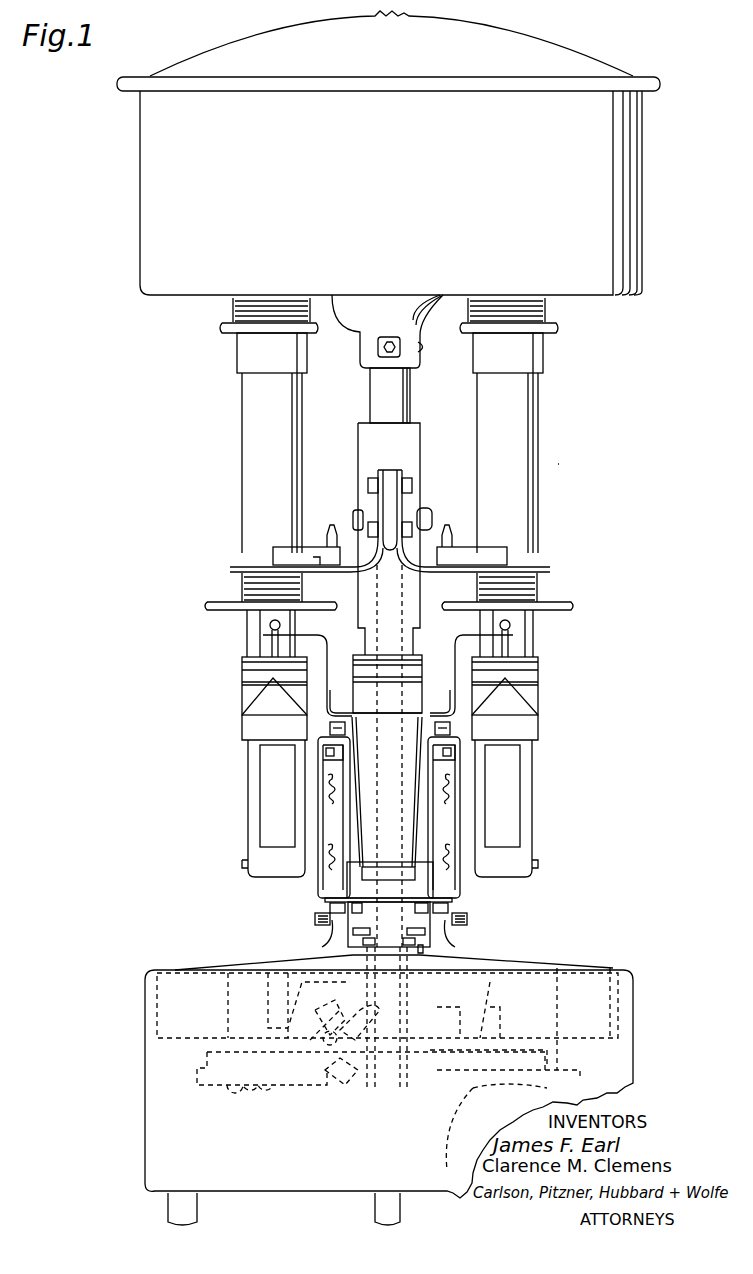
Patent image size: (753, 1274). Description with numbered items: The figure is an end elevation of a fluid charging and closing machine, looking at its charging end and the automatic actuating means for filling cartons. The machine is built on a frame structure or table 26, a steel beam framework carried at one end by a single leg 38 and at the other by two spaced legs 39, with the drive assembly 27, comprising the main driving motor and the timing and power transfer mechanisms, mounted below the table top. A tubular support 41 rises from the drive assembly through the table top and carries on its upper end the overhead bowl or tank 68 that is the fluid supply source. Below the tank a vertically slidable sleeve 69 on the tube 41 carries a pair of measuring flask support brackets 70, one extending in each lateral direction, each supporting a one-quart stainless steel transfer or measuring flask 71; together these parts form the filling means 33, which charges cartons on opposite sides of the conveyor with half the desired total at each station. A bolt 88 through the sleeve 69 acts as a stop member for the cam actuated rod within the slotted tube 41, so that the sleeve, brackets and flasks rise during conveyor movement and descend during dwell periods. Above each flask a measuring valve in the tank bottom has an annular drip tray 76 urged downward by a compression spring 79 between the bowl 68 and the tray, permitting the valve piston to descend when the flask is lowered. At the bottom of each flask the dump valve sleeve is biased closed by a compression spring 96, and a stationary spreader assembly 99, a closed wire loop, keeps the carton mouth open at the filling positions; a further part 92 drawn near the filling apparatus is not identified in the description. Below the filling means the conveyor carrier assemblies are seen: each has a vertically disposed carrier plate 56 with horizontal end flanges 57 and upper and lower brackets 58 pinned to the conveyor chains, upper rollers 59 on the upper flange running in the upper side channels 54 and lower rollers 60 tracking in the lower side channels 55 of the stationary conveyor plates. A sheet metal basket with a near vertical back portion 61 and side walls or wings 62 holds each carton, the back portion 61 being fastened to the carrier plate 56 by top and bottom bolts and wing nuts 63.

The overhead bowl or tank 68 is at (505, 243).
The compression spring 79 is at (236, 318).
The annular drip tray 76 is at (493, 333).
The transfer or measuring flask 71 is at (245, 457).
The filling means 33 is at (567, 467).
The tubular support 41 is at (410, 406).
The vertically slidable sleeve 69 is at (415, 462).
The bolt 88 is at (432, 518).
The measuring flask support brackets 70 is at (348, 573).
The compression spring 96 is at (243, 585).
The stationary spreader assembly 99 is at (250, 661).
The wire 92 is at (340, 640).
The upper side channels 54 is at (432, 718).
The upper roller or wheel 59 is at (330, 728).
The horizontal end flanges 57 is at (328, 745).
The upper and lower brackets 58 is at (330, 775).
The carrier plate 56 is at (318, 820).
The back portion 61 is at (475, 775).
The side walls or wings 62 is at (515, 812).
The bolts and wing nuts 63 is at (452, 800).
The lower rollers 60 is at (327, 903).
The lower side channels 55 is at (322, 947).
The frame structure or table 26 is at (175, 968).
The drive assembly 27 is at (354, 1107).
The legs 39 is at (196, 1222).
The leg 38 is at (400, 1222).